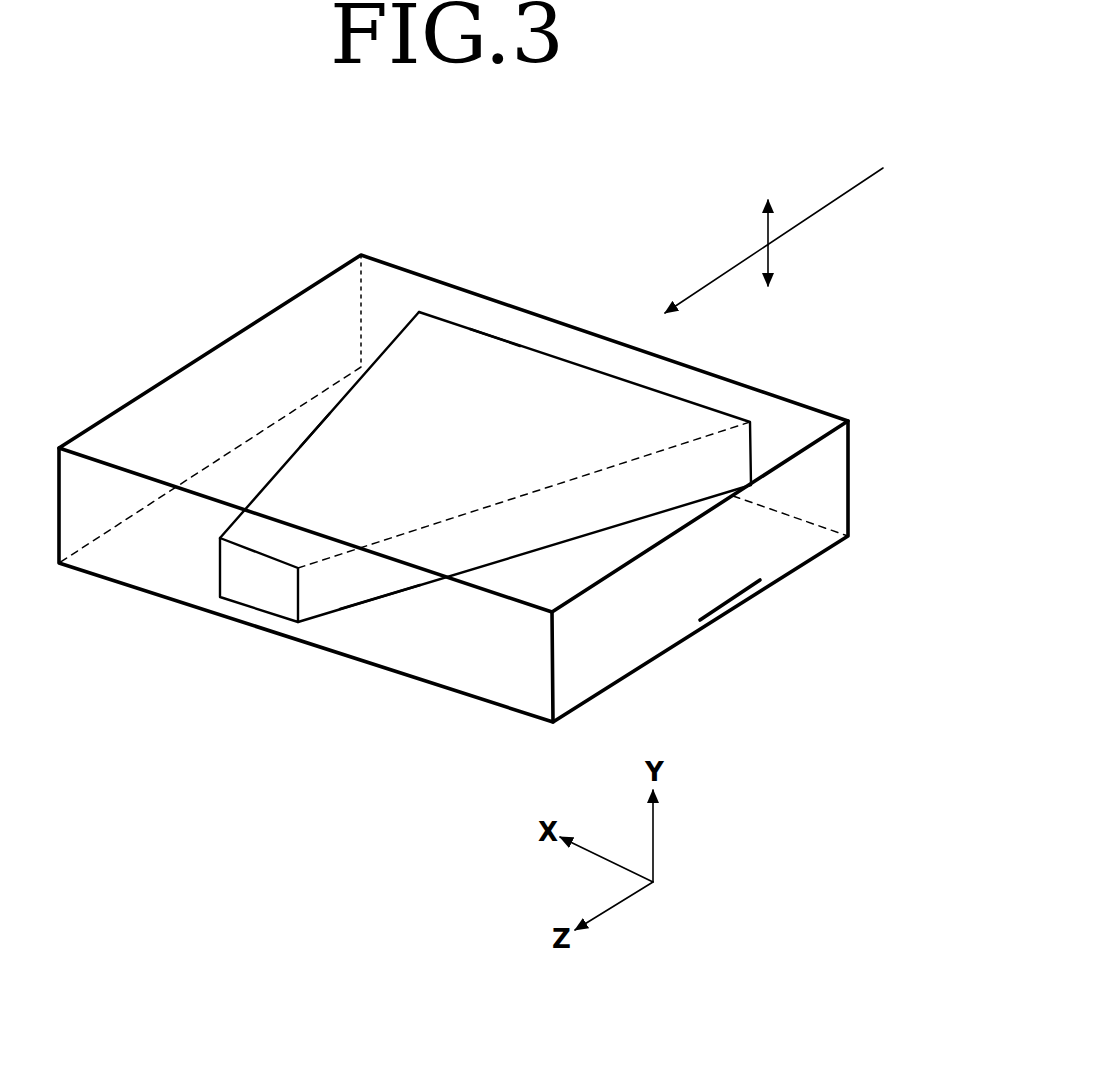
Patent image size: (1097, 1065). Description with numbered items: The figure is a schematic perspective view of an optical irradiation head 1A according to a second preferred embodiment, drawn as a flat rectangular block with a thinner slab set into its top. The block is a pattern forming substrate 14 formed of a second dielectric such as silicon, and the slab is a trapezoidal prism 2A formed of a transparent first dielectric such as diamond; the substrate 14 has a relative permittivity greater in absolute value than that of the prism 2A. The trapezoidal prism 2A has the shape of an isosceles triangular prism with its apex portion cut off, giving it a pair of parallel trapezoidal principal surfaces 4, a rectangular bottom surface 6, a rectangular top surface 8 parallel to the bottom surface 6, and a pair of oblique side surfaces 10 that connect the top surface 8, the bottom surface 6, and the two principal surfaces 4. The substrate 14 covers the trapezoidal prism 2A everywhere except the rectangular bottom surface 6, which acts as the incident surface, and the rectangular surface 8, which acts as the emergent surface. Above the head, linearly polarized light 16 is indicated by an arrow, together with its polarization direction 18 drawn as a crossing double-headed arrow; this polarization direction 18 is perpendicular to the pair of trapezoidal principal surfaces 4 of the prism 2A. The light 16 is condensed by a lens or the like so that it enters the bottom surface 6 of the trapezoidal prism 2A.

The optical irradiation head 1A is at (285, 295).
The trapezoidal prism 2A is at (533, 342).
The trapezoidal principal surfaces 4 is at (370, 413).
The rectangular bottom surface 6 is at (492, 333).
The rectangular top surface 8 is at (230, 570).
The oblique side surfaces 10 is at (302, 433).
The pattern forming substrate 14 is at (697, 602).
The linearly polarized light 16 is at (708, 283).
The polarization direction 18 is at (770, 258).